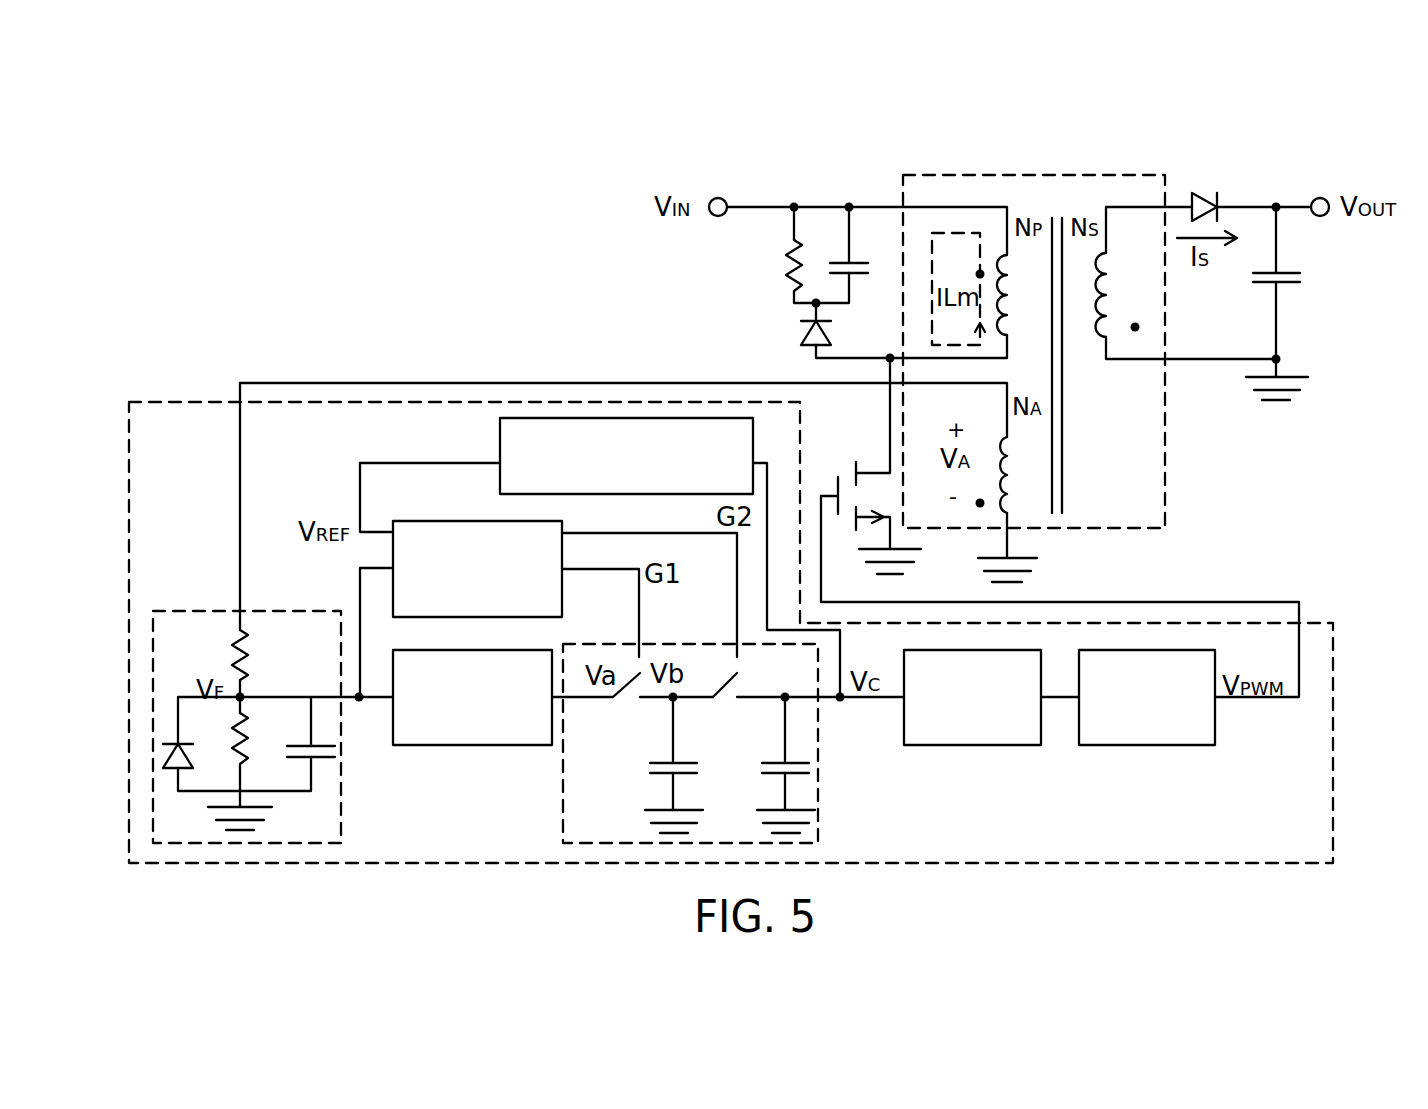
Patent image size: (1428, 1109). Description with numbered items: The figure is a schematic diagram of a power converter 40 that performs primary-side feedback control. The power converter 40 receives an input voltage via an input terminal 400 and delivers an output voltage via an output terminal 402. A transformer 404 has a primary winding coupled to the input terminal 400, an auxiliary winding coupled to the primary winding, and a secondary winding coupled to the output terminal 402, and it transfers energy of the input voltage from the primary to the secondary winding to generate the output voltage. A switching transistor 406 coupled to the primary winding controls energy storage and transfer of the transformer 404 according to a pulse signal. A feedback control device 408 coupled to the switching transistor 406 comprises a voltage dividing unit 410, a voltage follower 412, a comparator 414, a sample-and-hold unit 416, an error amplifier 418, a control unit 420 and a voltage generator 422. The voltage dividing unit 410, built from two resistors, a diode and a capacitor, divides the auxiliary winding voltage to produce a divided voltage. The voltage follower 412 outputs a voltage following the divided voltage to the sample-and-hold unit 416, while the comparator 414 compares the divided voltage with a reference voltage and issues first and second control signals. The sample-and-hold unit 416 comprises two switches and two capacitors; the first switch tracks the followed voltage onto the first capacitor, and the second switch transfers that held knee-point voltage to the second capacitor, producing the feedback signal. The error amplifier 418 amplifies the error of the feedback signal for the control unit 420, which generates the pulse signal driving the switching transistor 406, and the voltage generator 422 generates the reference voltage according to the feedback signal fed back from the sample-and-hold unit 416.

The power converter 40 is at (1233, 140).
The input terminal 400 is at (718, 217).
The output terminal 402 is at (1321, 217).
The transformer 404 is at (975, 175).
The switching transistor 406 is at (878, 466).
The feedback control device 408 is at (1324, 622).
The voltage dividing unit 410 is at (222, 610).
The voltage follower 412 is at (470, 746).
The comparator 414 is at (500, 520).
The sample-and-hold unit 416 is at (719, 643).
The error amplifier 418 is at (1008, 745).
The control unit 420 is at (1183, 745).
The voltage generator 422 is at (500, 432).